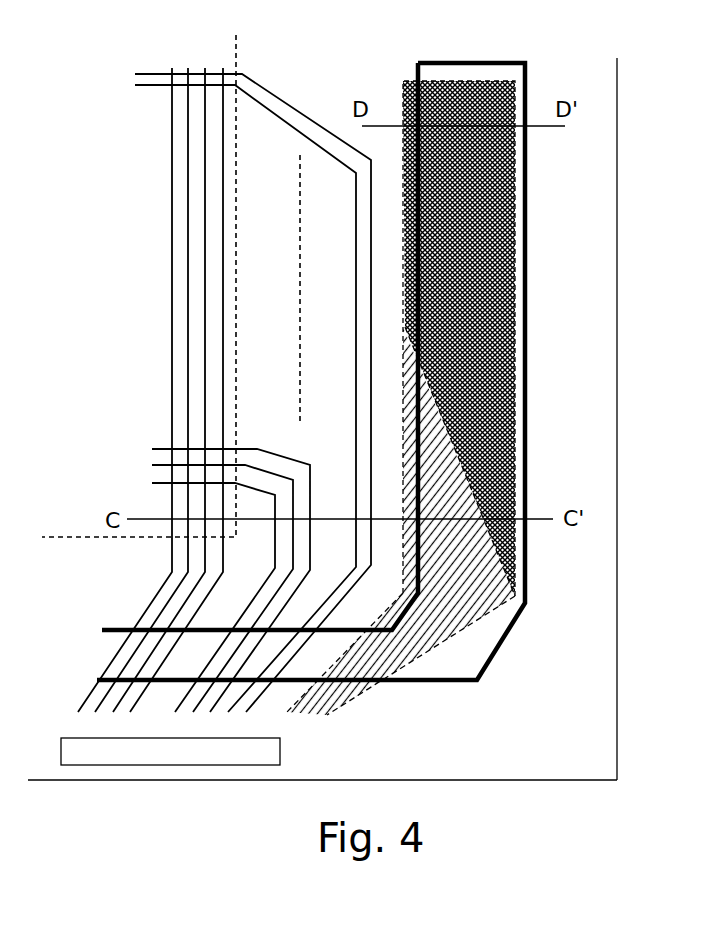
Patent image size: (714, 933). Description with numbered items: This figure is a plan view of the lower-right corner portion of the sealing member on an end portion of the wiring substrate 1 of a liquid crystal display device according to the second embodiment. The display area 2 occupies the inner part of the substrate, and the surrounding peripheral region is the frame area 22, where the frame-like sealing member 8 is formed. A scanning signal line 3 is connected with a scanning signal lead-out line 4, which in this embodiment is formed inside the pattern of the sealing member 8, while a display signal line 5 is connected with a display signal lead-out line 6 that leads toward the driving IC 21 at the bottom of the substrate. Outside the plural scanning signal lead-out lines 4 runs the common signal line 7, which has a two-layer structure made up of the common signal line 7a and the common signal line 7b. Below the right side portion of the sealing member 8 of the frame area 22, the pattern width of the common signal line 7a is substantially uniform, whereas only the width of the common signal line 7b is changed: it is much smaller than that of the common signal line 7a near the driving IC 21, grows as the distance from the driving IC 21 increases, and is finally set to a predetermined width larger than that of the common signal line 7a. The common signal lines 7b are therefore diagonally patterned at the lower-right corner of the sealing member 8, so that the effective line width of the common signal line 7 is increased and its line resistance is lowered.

The wiring substrate 1 is at (608, 183).
The display area 2 is at (230, 352).
The scanning signal line 3 is at (142, 87).
The scanning signal lead-out line 4 is at (355, 410).
The display signal line 5 is at (172, 243).
The display signal lead-out line 6 is at (165, 590).
The common signal line 7 is at (507, 329).
The common signal line (lower layer) 7a is at (333, 698).
The common signal line (upper layer) 7b is at (507, 413).
The sealing member 8 is at (523, 254).
The driving IC 21 is at (72, 743).
The frame area 22 is at (135, 600).